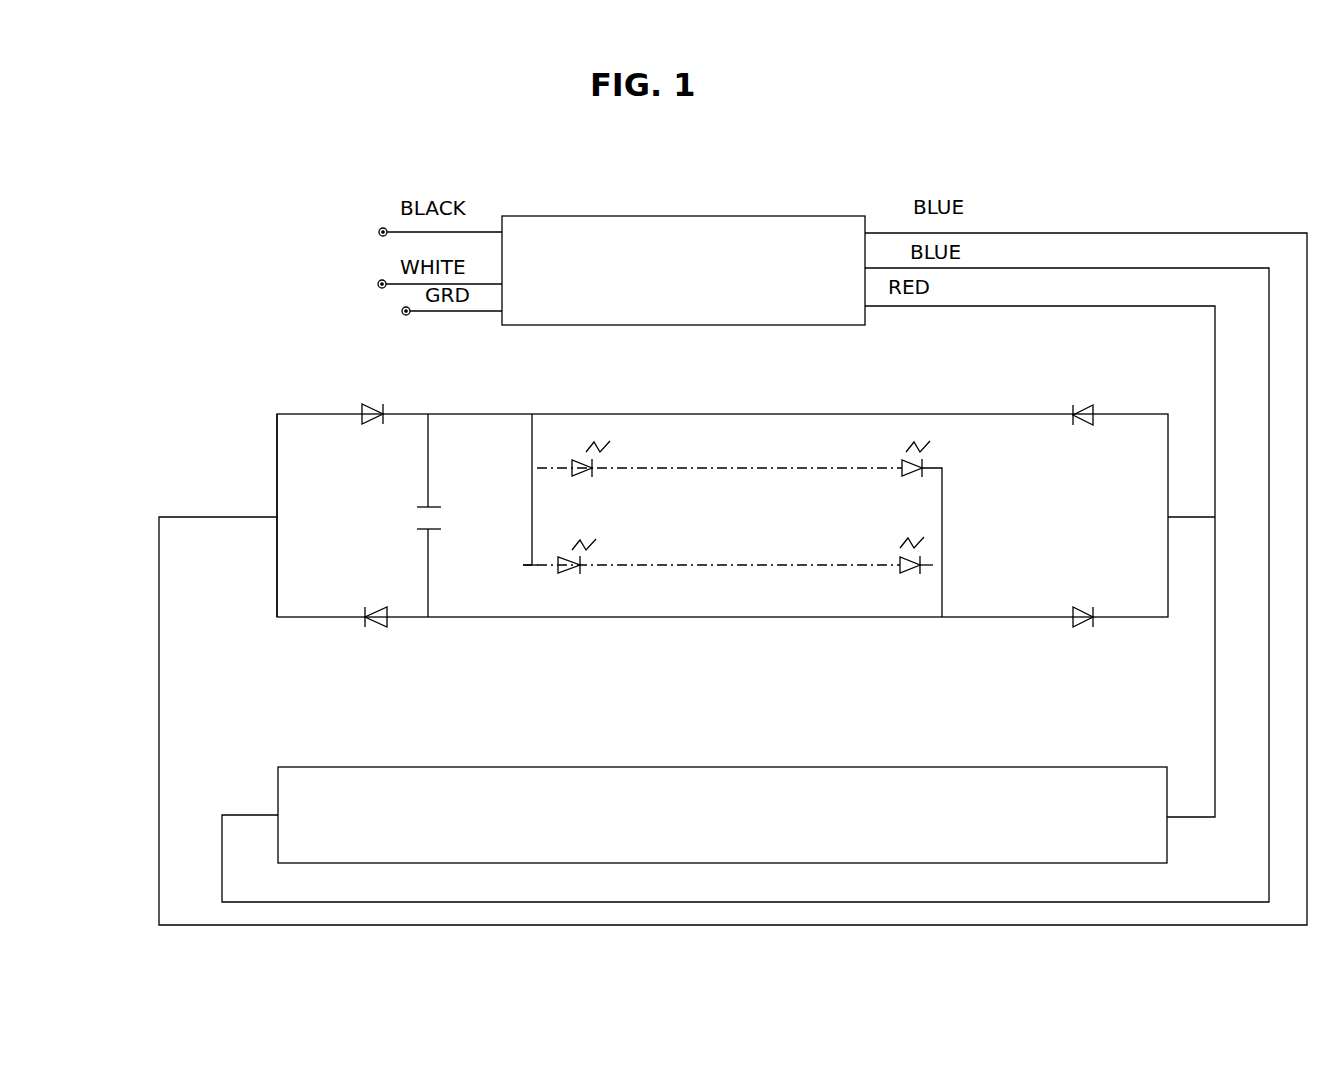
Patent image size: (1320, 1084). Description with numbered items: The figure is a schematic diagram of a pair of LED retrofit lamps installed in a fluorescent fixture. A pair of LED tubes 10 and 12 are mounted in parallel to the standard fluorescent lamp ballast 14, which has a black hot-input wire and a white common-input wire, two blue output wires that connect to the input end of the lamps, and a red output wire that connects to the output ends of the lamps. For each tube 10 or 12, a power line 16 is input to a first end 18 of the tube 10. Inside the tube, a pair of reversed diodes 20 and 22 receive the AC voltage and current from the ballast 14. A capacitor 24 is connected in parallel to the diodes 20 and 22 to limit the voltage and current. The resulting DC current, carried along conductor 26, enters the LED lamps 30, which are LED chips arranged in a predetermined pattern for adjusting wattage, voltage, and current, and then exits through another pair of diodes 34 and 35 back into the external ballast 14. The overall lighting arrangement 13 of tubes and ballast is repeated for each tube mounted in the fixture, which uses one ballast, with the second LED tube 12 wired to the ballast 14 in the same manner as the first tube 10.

The LED tube 10 is at (987, 420).
The LED tube 12 is at (951, 767).
The lighting system 13 is at (660, 700).
The fluorescent lamp ballast 14 is at (770, 243).
The power line 16 is at (183, 518).
The first end 18 is at (283, 413).
The reversed diode 20 is at (363, 412).
The reversed diode 22 is at (387, 607).
The capacitor 24 is at (432, 507).
The LED string conductor 26 is at (533, 440).
The LED lamps 30 is at (775, 432).
The diode 34 is at (1075, 612).
The diode 35 is at (1090, 407).